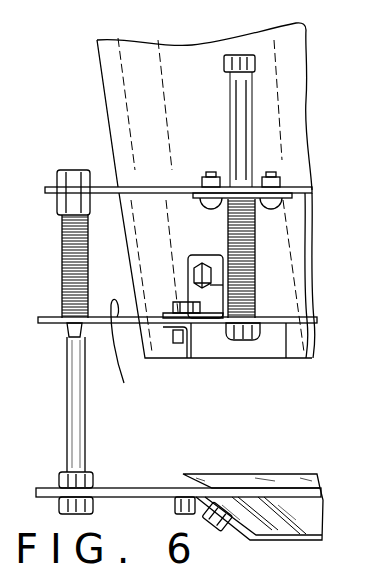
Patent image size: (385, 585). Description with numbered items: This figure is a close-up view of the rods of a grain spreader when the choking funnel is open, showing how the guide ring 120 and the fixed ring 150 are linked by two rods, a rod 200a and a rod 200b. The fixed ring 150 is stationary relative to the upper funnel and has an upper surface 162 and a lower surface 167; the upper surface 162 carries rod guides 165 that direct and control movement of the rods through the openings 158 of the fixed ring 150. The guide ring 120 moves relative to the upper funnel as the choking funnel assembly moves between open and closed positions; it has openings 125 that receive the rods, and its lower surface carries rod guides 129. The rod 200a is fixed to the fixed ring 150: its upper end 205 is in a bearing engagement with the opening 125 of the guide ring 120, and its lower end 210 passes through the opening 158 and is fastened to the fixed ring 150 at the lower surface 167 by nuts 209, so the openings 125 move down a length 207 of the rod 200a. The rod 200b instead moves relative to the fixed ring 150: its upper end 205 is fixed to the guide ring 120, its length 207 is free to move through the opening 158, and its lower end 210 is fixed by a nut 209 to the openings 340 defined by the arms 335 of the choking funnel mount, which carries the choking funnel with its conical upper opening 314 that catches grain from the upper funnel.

The guide ring 120 is at (147, 187).
The openings 125 is at (253, 185).
The rod guides 129 is at (286, 216).
The fixed ring 150 is at (125, 323).
The openings 158 is at (55, 317).
The upper surface 162 is at (125, 353).
The rod guides 165 is at (75, 322).
The lower surface 167 is at (294, 360).
The rod 200a is at (237, 140).
The rod 200b is at (77, 368).
The upper end 205 is at (244, 82).
The length 207 is at (62, 274).
The nuts 209 is at (247, 341).
The lower end 210 is at (256, 310).
The upper opening 314 is at (255, 474).
The arms 335 is at (118, 488).
The openings 340 is at (60, 503).